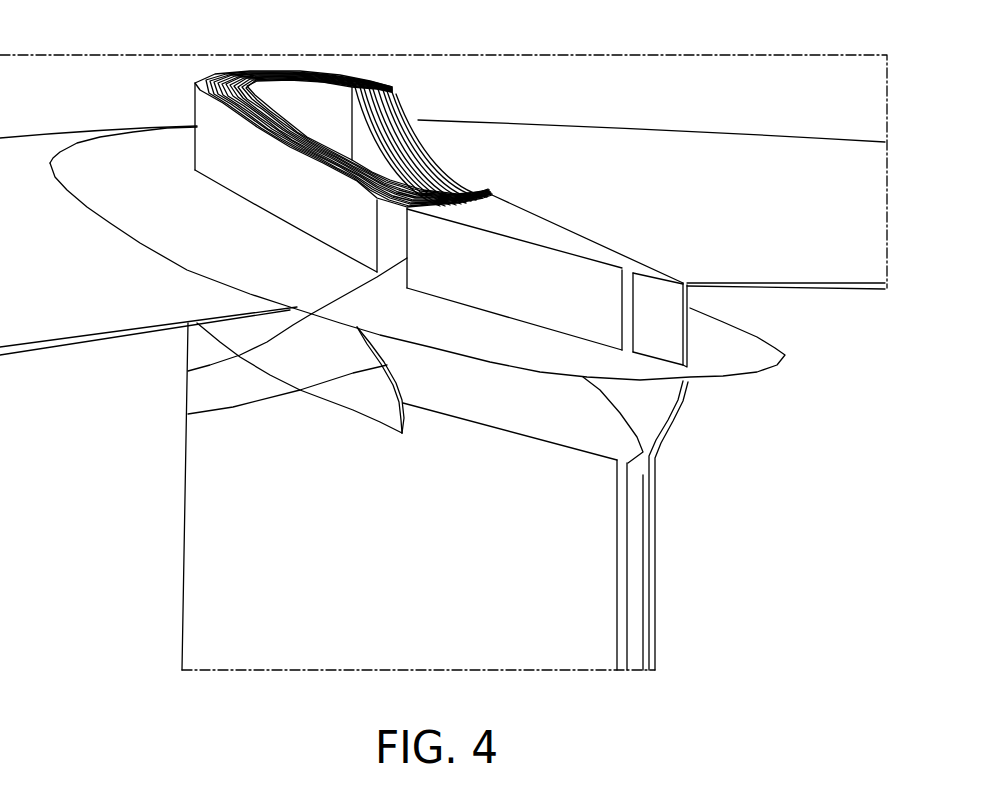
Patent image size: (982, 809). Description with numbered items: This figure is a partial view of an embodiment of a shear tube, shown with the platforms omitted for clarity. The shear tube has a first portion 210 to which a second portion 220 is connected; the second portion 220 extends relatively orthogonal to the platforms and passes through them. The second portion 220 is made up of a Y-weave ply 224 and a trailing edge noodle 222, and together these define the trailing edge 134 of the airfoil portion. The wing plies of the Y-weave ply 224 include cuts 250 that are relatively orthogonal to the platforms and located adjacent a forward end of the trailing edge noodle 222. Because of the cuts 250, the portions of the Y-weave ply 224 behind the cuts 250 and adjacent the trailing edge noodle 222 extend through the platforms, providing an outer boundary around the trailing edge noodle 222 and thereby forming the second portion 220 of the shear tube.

The first portion 210 is at (195, 83).
The second portion 220 is at (582, 232).
The trailing edge noodle 222 is at (523, 230).
The Y-weave ply 224 is at (690, 300).
The cuts 250 is at (188, 414).
The trailing edge 134 is at (648, 555).